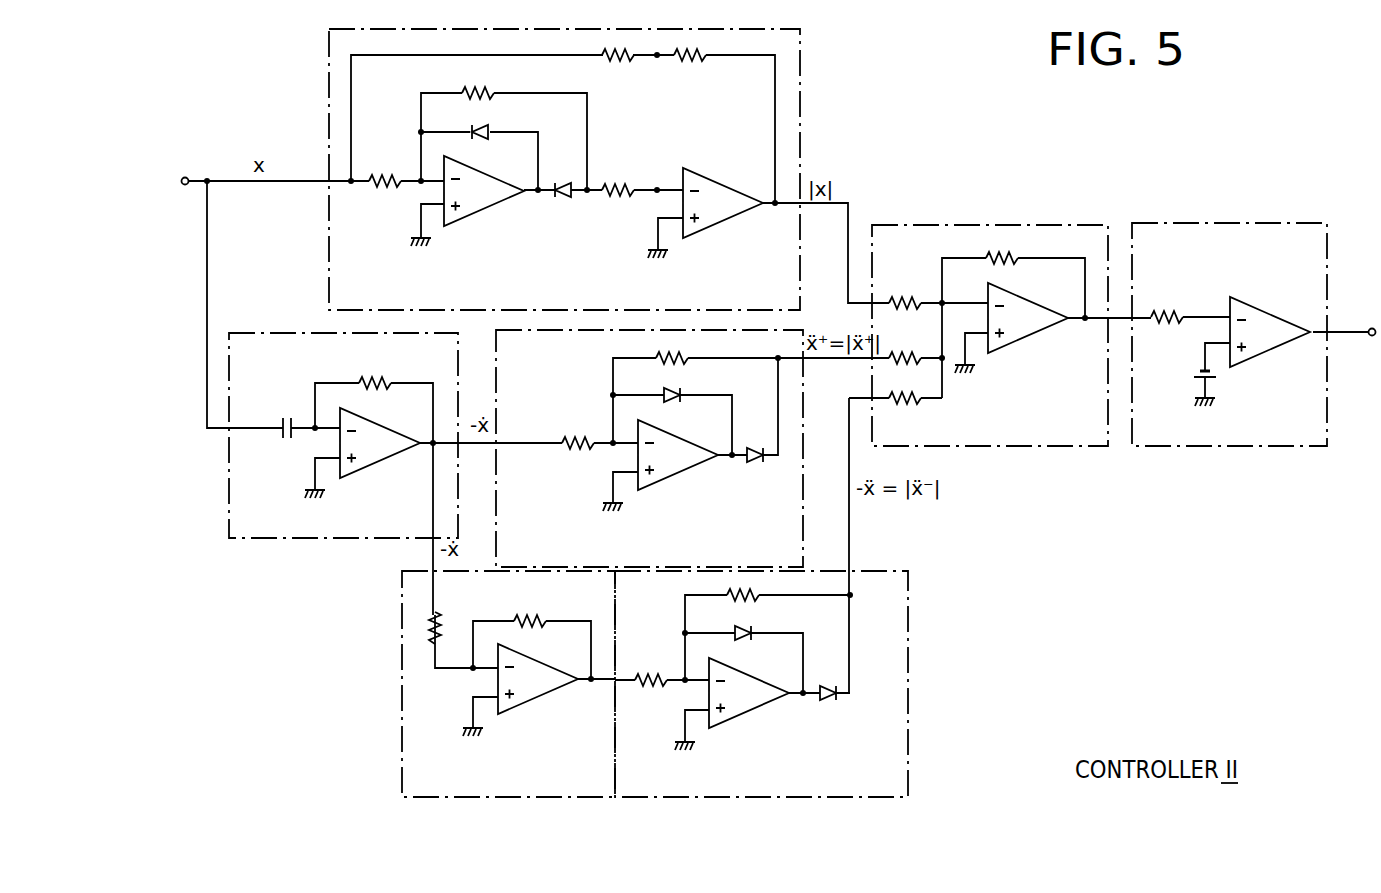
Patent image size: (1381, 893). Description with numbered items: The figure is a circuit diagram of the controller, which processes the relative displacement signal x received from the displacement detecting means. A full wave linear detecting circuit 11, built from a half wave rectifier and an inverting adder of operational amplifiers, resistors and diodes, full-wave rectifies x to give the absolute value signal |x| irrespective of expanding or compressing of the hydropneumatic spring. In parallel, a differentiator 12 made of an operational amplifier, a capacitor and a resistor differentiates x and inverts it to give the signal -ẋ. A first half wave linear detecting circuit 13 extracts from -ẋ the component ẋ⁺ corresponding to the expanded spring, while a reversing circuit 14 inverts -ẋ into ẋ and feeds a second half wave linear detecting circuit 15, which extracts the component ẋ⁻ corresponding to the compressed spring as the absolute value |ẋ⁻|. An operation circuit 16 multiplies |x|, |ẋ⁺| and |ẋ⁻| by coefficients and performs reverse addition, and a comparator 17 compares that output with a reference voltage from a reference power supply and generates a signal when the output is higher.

The full wave linear detecting circuit 11 is at (800, 58).
The differentiator 12 is at (271, 333).
The first half wave linear detecting circuit 13 is at (788, 331).
The reversing circuit 14 is at (402, 712).
The second half wave linear detecting circuit 15 is at (908, 697).
The operation circuit 16 is at (1060, 225).
The comparator 17 is at (1270, 223).